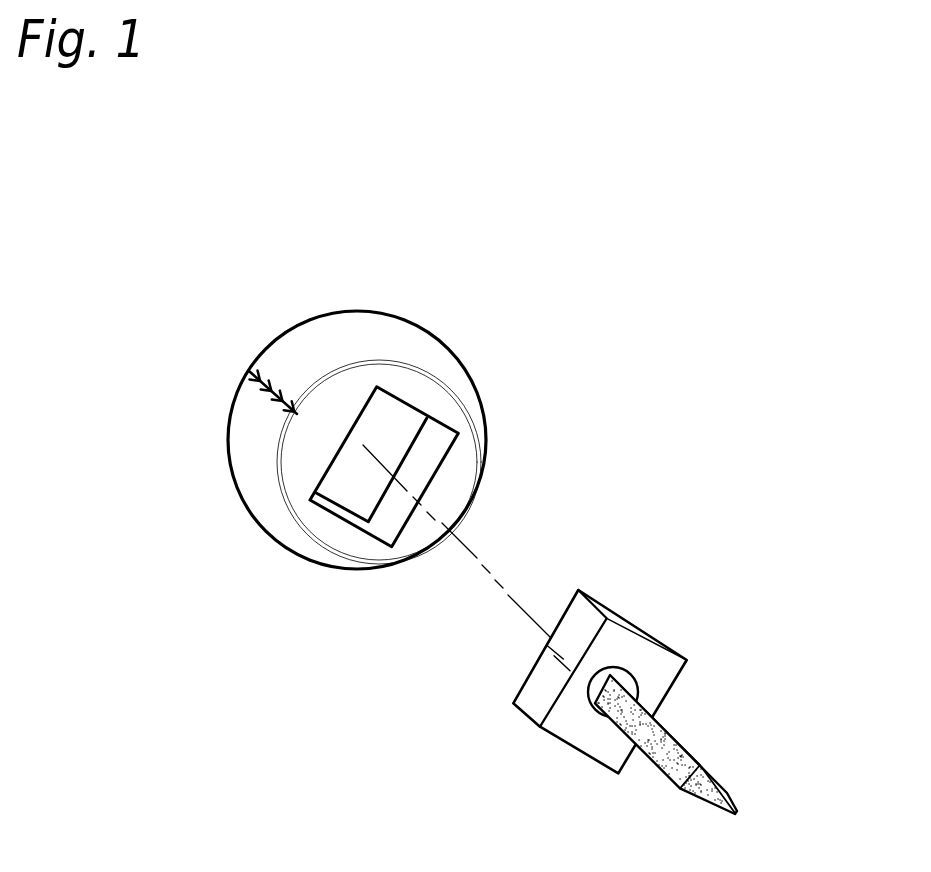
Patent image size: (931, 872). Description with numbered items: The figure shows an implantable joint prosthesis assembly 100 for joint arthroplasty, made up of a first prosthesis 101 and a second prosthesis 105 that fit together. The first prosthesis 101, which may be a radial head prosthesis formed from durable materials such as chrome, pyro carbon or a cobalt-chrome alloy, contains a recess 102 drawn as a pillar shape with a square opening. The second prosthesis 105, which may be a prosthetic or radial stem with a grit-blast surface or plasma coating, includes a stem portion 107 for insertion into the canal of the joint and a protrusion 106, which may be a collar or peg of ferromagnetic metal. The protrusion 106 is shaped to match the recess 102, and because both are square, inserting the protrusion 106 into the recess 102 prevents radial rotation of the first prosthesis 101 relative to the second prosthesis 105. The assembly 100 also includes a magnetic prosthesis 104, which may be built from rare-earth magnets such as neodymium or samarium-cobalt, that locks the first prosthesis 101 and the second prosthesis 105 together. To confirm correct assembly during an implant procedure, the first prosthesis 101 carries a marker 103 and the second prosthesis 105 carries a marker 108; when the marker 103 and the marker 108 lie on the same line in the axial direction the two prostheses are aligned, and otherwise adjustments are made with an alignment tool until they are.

The implantable joint prosthesis assembly 100 is at (780, 258).
The first prosthesis 101 is at (466, 305).
The recess 102 is at (442, 470).
The marker 103 is at (267, 380).
The magnetic prosthesis 104 is at (353, 480).
The second prosthesis 105 is at (622, 682).
The protrusion 106 is at (620, 604).
The stem portion 107 is at (698, 762).
The marker 108 is at (550, 655).